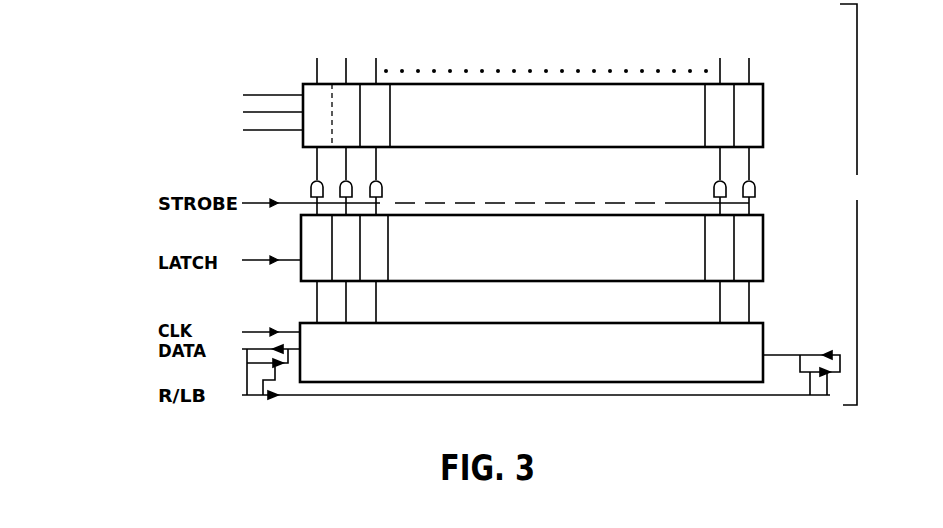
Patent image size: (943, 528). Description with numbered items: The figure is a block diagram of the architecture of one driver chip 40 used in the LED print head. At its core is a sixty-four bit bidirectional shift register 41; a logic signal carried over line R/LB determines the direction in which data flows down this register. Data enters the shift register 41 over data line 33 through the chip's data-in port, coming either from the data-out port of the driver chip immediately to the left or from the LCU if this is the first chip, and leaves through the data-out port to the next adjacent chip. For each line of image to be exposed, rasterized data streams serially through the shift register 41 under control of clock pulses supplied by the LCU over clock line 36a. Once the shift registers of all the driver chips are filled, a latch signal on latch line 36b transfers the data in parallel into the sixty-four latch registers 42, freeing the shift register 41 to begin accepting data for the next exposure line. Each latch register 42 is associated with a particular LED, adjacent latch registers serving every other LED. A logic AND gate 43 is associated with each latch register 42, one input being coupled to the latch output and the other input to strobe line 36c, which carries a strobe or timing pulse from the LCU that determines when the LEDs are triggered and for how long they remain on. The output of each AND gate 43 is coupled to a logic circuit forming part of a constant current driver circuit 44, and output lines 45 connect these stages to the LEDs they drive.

The data line 33 is at (300, 363).
The clock line 36a is at (283, 333).
The latch line 36b is at (287, 262).
The strobe line 36c is at (285, 201).
The driver chip 40 is at (853, 204).
The bidirectional shift register 41 is at (763, 333).
The latch register 42 is at (763, 252).
The AND gate 43 is at (315, 182).
The constant current driver circuit 44 is at (757, 119).
The output lines 45 is at (316, 156).